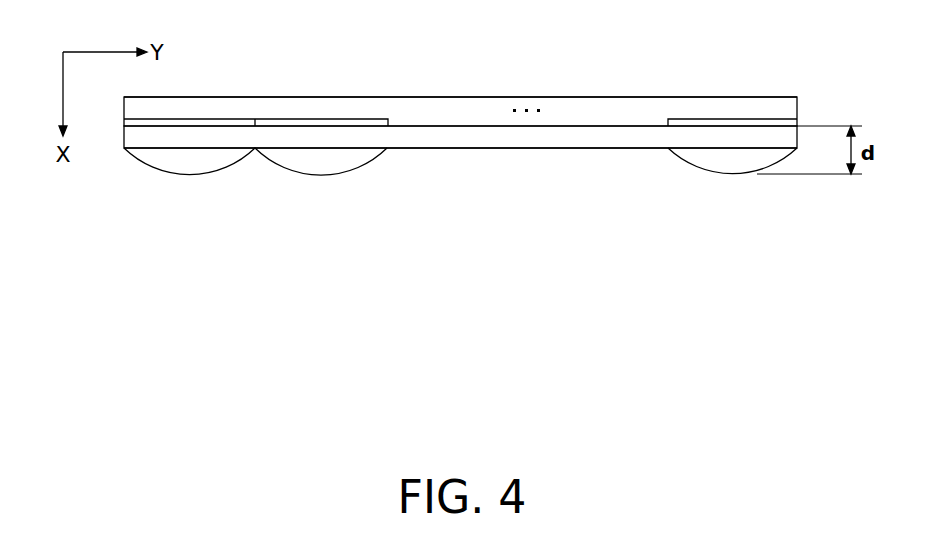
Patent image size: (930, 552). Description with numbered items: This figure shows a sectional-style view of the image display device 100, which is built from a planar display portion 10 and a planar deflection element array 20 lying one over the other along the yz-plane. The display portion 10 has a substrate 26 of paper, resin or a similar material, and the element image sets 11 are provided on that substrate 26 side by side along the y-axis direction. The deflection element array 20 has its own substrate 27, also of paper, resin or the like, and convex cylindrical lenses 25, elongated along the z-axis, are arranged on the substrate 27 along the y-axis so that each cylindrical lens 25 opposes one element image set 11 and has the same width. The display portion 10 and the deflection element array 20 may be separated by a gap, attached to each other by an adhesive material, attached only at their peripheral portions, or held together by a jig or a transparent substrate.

The image display device 100 is at (782, 67).
The display portion 10 is at (438, 97).
The element image set 11 is at (223, 118).
The deflection element array 20 is at (452, 150).
The cylindrical lens 25 is at (193, 167).
The substrate 26 is at (575, 105).
The substrate 27 is at (575, 138).